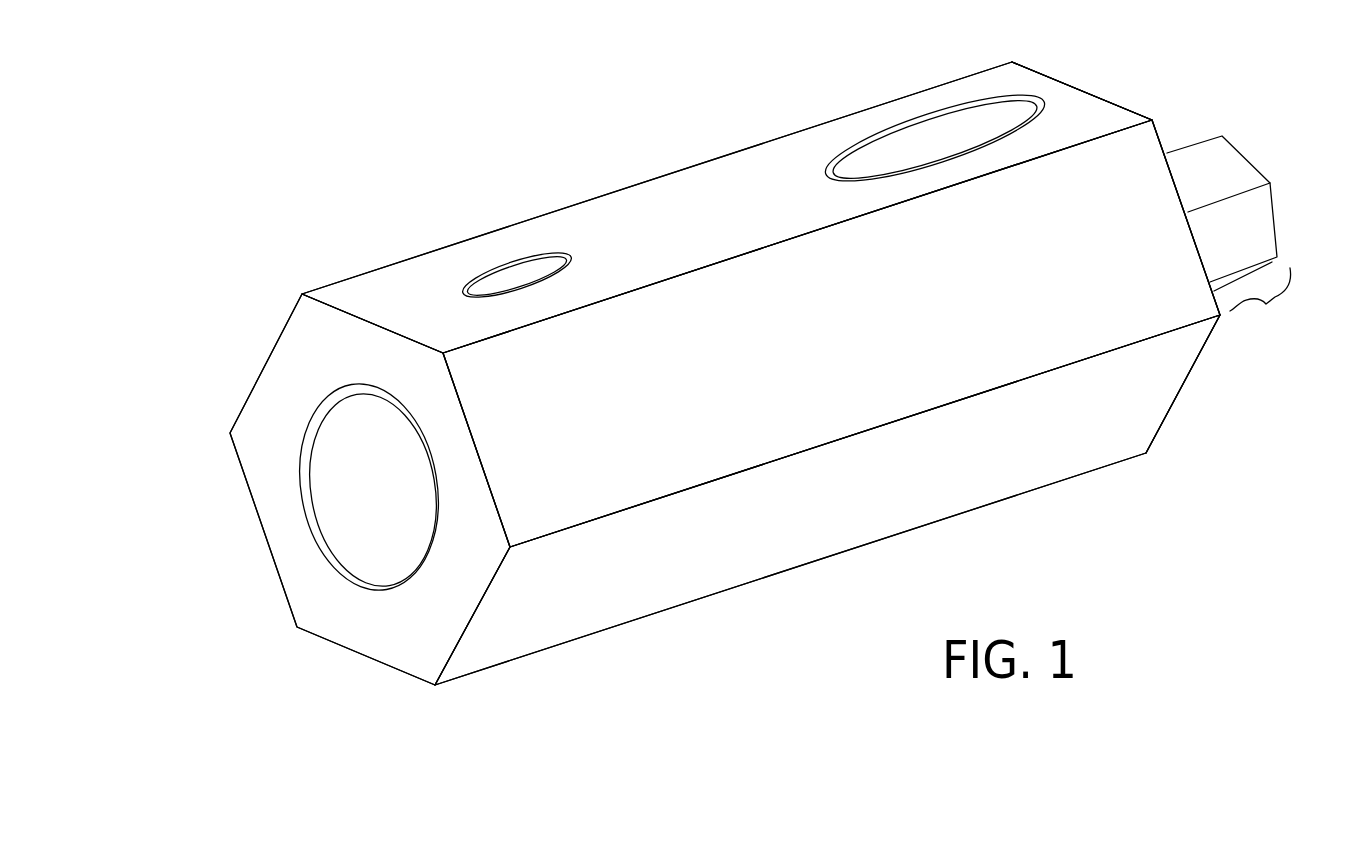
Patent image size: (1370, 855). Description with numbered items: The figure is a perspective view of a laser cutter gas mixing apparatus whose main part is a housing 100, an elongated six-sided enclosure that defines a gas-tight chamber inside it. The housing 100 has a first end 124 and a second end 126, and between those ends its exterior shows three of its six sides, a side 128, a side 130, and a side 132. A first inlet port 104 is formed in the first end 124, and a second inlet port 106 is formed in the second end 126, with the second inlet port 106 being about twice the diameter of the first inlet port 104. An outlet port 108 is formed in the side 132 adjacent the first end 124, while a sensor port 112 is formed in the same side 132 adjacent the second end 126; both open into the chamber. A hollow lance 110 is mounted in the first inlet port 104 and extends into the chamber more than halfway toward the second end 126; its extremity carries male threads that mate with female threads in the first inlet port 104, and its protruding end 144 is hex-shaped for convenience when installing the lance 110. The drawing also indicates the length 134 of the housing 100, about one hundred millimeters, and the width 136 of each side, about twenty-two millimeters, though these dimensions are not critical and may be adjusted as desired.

The housing 100 is at (758, 147).
The first inlet port 104 is at (1198, 113).
The second inlet port 106 is at (356, 578).
The outlet port 108 is at (933, 98).
The hollow lance 110 is at (1243, 153).
The sensor port 112 is at (500, 253).
The first end 124 is at (1046, 75).
The second end 126 is at (340, 364).
The side 128 is at (645, 580).
The side 130 is at (567, 386).
The side 132 is at (725, 224).
The length 134 is at (490, 485).
The width 136 is at (827, 442).
The end 144 is at (1264, 303).